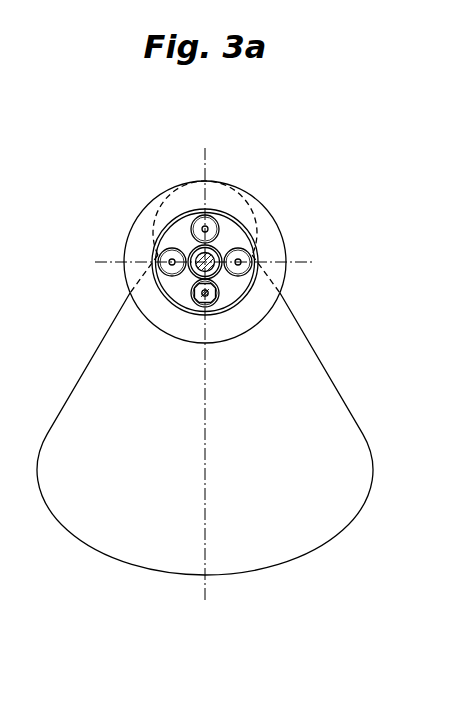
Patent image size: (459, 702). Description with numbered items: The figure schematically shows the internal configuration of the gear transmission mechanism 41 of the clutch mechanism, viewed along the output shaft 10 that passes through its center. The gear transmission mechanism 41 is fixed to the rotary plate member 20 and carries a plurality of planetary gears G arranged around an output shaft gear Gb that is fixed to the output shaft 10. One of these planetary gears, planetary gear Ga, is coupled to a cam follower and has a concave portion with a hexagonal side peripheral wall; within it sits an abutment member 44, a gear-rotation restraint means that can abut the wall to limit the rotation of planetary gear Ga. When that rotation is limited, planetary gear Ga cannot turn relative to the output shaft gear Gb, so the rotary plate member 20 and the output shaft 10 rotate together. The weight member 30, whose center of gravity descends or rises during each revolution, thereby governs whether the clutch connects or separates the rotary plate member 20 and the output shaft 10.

The output shaft 10 is at (220, 297).
The rotary plate member 20 is at (137, 218).
The weight member 30 is at (85, 371).
The gear transmission mechanism 41 is at (173, 207).
The abutment member 44 is at (214, 305).
The planetary gear G is at (170, 237).
The planetary gear Ga is at (200, 307).
The output shaft gear Gb is at (190, 303).